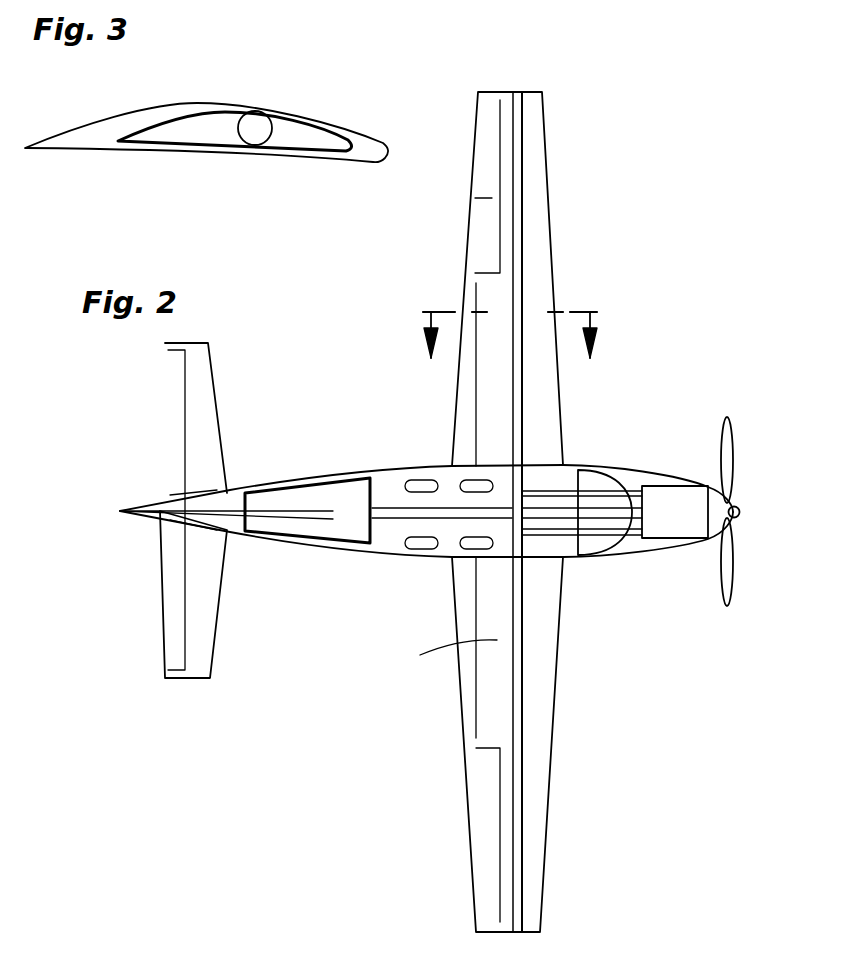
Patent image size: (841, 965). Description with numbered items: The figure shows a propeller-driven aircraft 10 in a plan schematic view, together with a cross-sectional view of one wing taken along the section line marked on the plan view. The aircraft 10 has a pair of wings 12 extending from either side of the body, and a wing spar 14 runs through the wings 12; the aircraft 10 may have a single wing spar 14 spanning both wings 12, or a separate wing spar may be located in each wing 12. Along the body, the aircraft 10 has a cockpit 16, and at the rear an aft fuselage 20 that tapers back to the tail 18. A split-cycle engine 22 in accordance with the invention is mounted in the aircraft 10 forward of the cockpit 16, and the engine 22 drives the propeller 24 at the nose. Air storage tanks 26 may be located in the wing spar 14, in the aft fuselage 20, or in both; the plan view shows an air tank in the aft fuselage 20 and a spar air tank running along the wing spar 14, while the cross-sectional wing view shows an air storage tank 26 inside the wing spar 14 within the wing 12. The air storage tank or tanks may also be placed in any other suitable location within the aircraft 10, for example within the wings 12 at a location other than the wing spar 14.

In FIG. 2, the propeller-driven aircraft 10 is at (662, 367).
In FIG. 3, the wings 12 is at (65, 132).
In FIG. 2, the wings 12 is at (557, 266).
In FIG. 3, the wing spar 14 is at (273, 118).
In FIG. 2, the wing spar 14 is at (522, 633).
In FIG. 2, the cockpit 16 is at (600, 464).
In FIG. 2, the tail 18 is at (132, 513).
In FIG. 2, the aft fuselage 20 is at (287, 547).
In FIG. 2, the split-cycle engine 22 is at (663, 485).
In FIG. 2, the propeller 24 is at (732, 587).
In FIG. 3, the air storage tanks 26 is at (245, 127).
In FIG. 2, the air storage tanks 26 is at (509, 118).